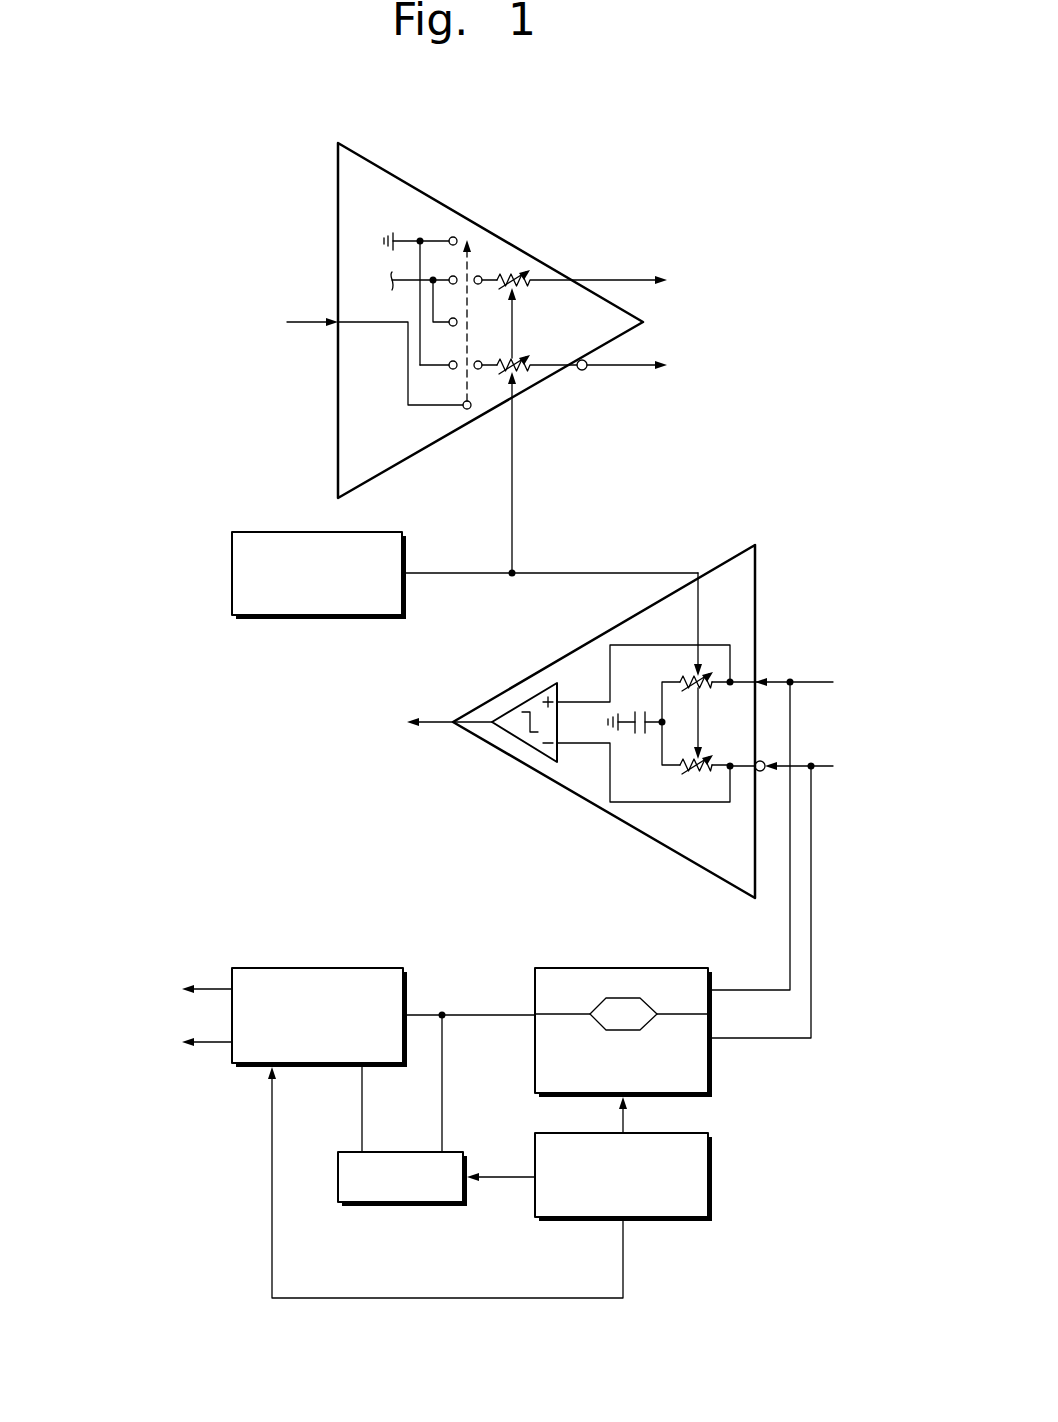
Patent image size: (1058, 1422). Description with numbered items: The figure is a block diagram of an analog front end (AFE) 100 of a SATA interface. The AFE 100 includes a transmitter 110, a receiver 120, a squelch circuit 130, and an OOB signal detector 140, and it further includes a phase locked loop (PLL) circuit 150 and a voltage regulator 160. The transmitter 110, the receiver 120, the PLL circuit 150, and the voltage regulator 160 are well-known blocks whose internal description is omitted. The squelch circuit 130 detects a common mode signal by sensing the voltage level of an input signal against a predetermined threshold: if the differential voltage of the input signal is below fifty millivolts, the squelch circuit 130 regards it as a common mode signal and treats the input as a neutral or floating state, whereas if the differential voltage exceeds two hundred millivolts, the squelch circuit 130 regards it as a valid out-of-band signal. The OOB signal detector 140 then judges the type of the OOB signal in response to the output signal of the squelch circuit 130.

The analog front end 100 is at (710, 138).
The transmitter 110 is at (437, 198).
The receiver 120 is at (757, 590).
The squelch circuit 130 is at (655, 968).
The OOB signal detector 140 is at (348, 968).
The phase locked loop (PLL) circuit 150 is at (418, 1206).
The voltage regulator 160 is at (678, 1221).